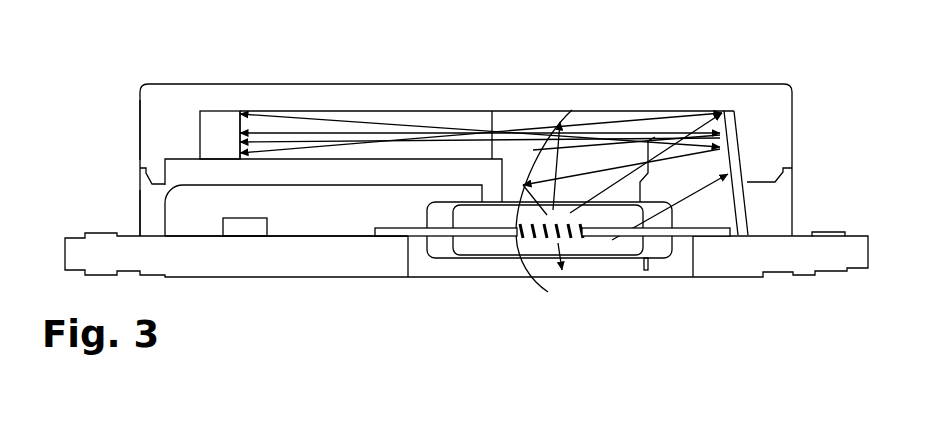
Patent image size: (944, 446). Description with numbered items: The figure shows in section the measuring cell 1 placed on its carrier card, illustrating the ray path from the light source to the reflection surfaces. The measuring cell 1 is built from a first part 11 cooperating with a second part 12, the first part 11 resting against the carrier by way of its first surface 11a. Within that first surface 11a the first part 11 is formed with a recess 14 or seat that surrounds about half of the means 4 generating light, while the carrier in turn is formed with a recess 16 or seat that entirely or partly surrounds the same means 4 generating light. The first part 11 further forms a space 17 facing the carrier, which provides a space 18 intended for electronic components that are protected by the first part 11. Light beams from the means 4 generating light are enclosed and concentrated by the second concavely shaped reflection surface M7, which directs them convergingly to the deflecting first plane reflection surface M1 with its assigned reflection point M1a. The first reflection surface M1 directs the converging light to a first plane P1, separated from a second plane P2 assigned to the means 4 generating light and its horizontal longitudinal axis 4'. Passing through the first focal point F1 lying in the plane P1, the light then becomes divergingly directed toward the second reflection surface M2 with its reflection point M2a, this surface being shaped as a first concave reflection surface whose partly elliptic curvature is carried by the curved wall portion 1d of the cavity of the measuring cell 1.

The measuring cell 1 is at (597, 88).
The curved wall portion 1d is at (210, 140).
The means generating light 4 is at (549, 267).
The longitudinally orientated axis 4' is at (830, 219).
The first part 11 is at (780, 202).
The first surface 11a is at (745, 267).
The second part 12 is at (780, 105).
The recess 14 is at (713, 258).
The recess 16 is at (680, 262).
The space 17 is at (193, 222).
The space for electronic components 18 is at (243, 228).
The first reflection surface M1 is at (730, 108).
The reflection point M1a is at (733, 142).
The second reflection surface M2 is at (237, 134).
The reflection point M2a is at (474, 89).
The second concavely shaped reflection surface M7 is at (560, 122).
The first focal point F1 is at (445, 136).
The first plane P1 is at (128, 120).
The second plane P2 is at (128, 224).